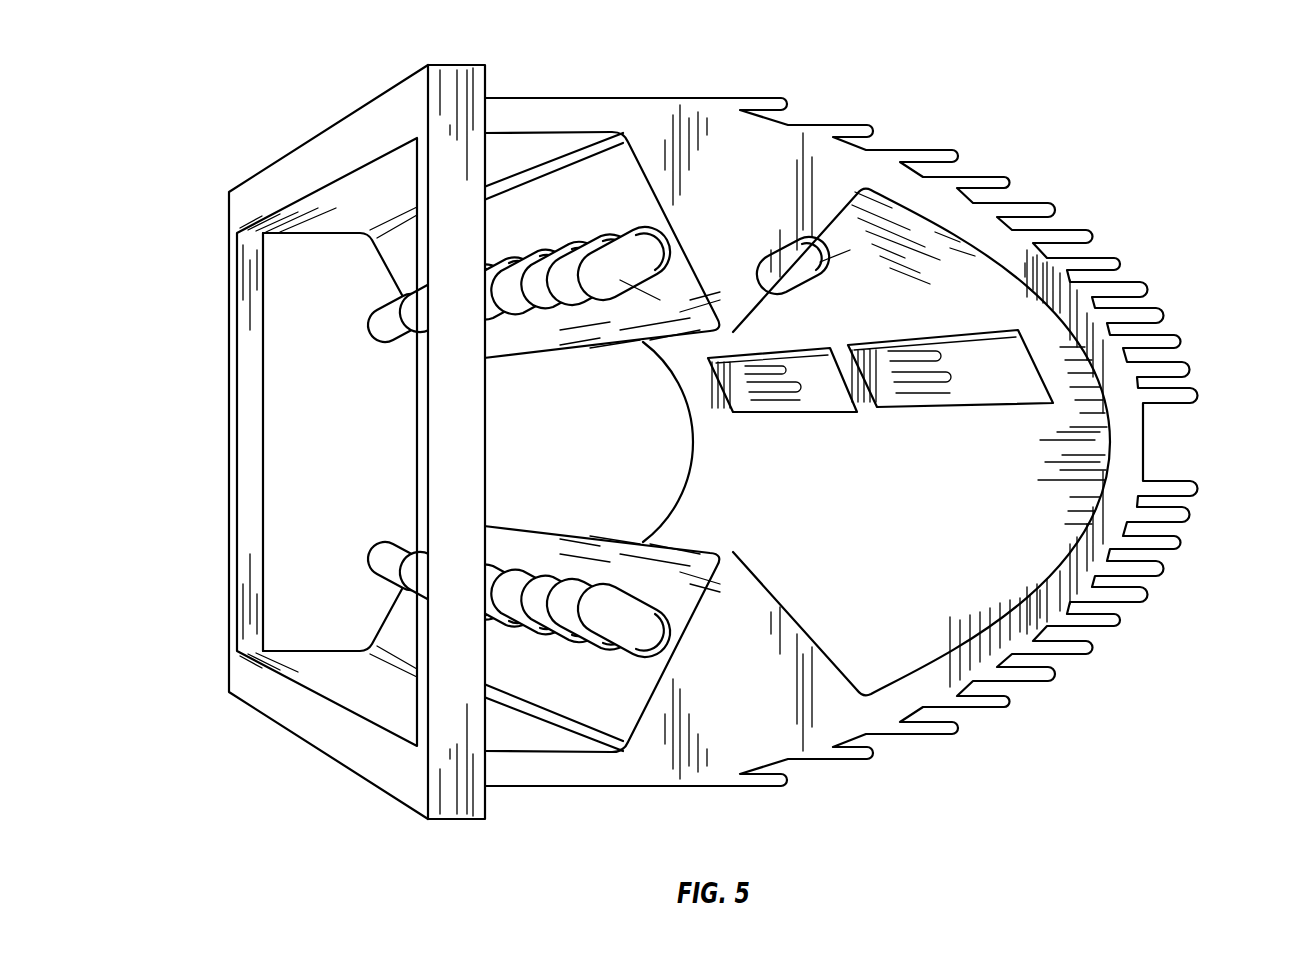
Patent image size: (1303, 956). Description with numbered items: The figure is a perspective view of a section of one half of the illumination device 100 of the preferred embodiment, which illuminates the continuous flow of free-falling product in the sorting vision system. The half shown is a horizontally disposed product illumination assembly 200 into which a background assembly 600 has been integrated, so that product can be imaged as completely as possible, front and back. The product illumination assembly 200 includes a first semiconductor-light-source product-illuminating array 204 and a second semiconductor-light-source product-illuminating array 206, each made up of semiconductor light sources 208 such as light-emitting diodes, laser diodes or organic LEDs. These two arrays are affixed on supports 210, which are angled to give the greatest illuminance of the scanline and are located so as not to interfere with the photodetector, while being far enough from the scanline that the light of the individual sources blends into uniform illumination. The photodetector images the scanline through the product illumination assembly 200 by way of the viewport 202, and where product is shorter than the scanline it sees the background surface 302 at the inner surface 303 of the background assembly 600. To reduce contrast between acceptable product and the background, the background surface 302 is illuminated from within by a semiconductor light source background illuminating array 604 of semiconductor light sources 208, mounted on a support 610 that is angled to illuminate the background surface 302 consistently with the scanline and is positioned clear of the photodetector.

The illumination device 100 is at (143, 42).
The product illumination assembly 200 is at (1106, 174).
The viewport 202 is at (747, 387).
The first semiconductor-light-source product-illuminating array 204 is at (382, 362).
The second semiconductor-light-source product-illuminating array 206 is at (360, 528).
The semiconductor light sources 208 is at (368, 327).
The supports 210 is at (393, 280).
The background surface 302 is at (1012, 588).
The inner surface 303 is at (930, 656).
The background assembly 600 is at (1094, 439).
The semiconductor light source background illuminating array 604 is at (868, 236).
The support 610 is at (823, 237).